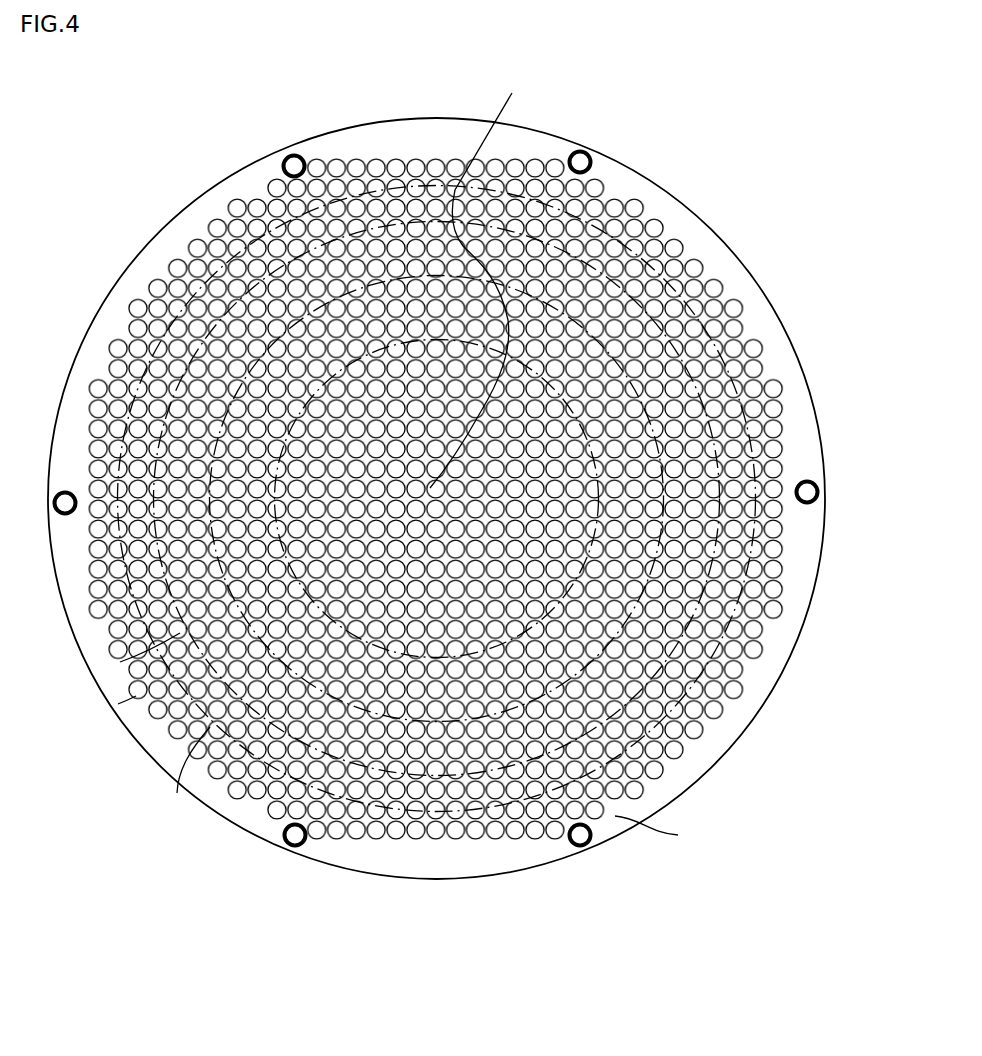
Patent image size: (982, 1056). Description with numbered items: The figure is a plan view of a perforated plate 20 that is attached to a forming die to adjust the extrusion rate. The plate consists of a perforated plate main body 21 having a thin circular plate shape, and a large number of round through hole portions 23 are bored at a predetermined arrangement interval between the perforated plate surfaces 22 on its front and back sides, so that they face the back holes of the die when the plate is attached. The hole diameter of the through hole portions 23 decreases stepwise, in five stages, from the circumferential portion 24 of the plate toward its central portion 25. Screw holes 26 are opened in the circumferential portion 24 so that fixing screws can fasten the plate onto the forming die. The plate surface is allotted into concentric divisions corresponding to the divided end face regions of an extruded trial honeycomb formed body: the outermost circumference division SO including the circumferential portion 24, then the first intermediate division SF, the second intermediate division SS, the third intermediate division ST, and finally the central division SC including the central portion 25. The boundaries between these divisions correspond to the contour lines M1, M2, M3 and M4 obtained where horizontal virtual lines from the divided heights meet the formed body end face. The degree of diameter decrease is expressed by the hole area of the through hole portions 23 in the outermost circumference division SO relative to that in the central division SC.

The perforated plate 20 is at (735, 204).
The perforated plate main body 21 is at (457, 498).
The perforated plate surface 22 is at (806, 392).
The through hole portion 23 is at (740, 300).
The circumferential portion 24 is at (687, 832).
The central portion 25 is at (505, 279).
The screw hole 26 is at (283, 162).
The central division SC is at (505, 279).
The outermost circumference division SO is at (687, 832).
The contour line M1 is at (792, 544).
The contour line M2 is at (776, 648).
The contour line M3 is at (740, 720).
The contour line M4 is at (440, 645).
The third intermediate division ST is at (120, 662).
The second intermediate division SS is at (118, 704).
The first intermediate division SF is at (177, 793).